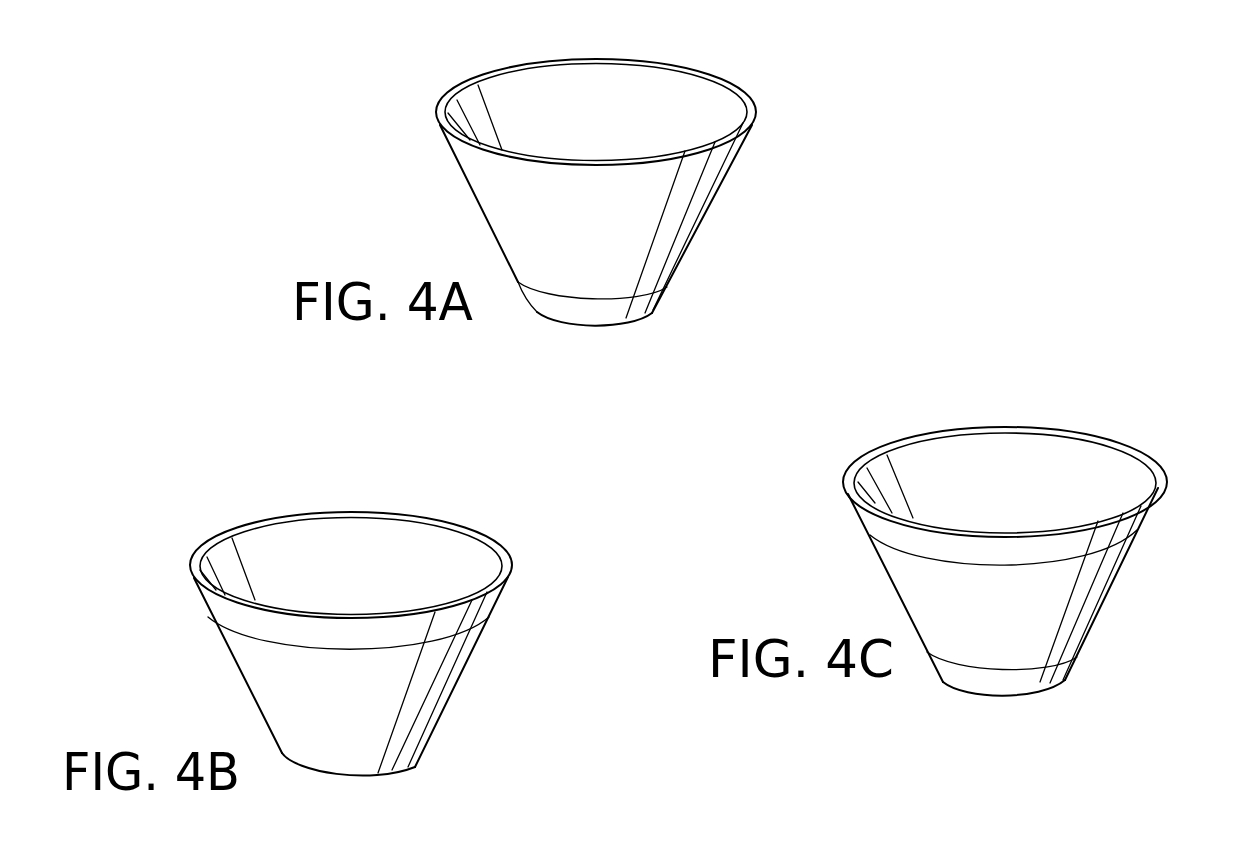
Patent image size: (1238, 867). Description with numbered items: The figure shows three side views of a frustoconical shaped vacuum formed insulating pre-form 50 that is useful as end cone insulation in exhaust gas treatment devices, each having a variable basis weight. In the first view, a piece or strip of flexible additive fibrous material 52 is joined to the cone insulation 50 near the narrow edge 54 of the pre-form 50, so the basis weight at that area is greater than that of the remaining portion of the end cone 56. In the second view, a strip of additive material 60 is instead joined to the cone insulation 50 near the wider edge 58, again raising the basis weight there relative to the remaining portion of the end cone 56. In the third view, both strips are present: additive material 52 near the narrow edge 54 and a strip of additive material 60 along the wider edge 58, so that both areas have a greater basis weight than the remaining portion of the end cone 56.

In FIG. 4A, the insulating pre-form 50 is at (798, 97).
In FIG. 4B, the insulating pre-form 50 is at (518, 527).
In FIG. 4C, the insulating pre-form 50 is at (1084, 399).
In FIG. 4A, the additive material 52 is at (652, 302).
In FIG. 4C, the additive material 52 is at (1060, 675).
In FIG. 4A, the narrow edge 54 is at (553, 322).
In FIG. 4B, the narrow edge 54 is at (332, 778).
In FIG. 4C, the narrow edge 54 is at (965, 692).
In FIG. 4A, the remaining portion of the end cone 56 is at (708, 184).
In FIG. 4B, the remaining portion of the end cone 56 is at (430, 668).
In FIG. 4C, the remaining portion of the end cone 56 is at (1083, 590).
In FIG. 4A, the wider edge 58 is at (596, 112).
In FIG. 4B, the wider edge 58 is at (285, 610).
In FIG. 4C, the wider edge 58 is at (943, 523).
In FIG. 4B, the strip of additive material 60 is at (222, 608).
In FIG. 4C, the strip of additive material 60 is at (877, 522).